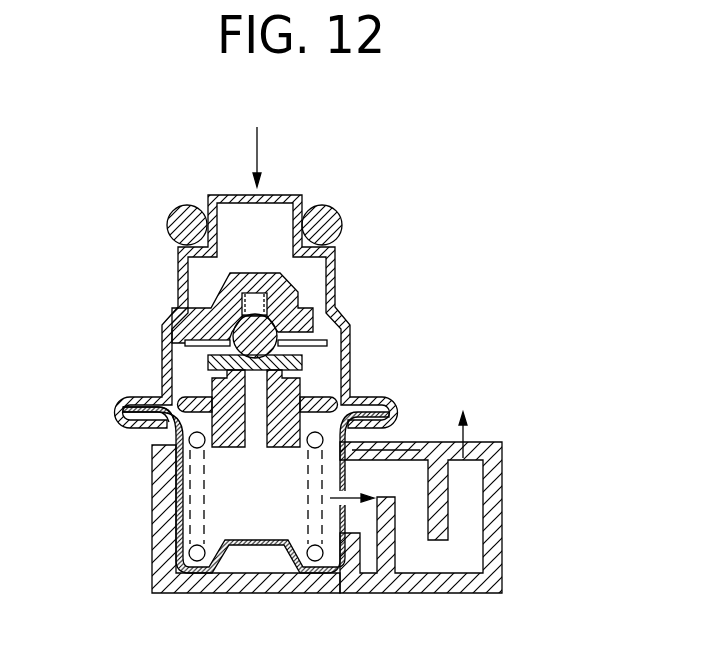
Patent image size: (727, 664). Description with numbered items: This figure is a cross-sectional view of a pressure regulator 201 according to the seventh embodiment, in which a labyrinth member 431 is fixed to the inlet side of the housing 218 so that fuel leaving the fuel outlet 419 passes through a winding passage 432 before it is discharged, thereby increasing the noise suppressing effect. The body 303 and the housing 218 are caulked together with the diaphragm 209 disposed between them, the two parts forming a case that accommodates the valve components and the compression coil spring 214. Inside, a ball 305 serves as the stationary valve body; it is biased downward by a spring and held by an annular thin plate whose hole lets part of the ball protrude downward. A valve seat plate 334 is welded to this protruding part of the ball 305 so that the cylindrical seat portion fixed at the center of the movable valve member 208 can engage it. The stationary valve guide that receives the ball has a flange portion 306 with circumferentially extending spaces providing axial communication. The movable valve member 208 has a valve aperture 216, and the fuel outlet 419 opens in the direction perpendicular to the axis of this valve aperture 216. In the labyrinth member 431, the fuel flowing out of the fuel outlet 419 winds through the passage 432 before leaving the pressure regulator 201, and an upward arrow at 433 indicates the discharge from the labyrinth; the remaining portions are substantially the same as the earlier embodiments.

The pressure regulator 201 is at (166, 281).
The body 303 is at (332, 290).
The flange portion 306 is at (170, 313).
The ball 305 is at (163, 337).
The valve seat plate 334 is at (210, 362).
The diaphragm 209 is at (163, 435).
The movable valve member 208 is at (237, 437).
The housing 218 is at (165, 540).
The valve aperture 216 is at (253, 437).
The compression coil spring 214 is at (323, 573).
The labyrinth member 431 is at (495, 568).
The winding passage 432 is at (423, 553).
The outlet 433 is at (477, 442).
The fuel outlet 419 is at (387, 442).